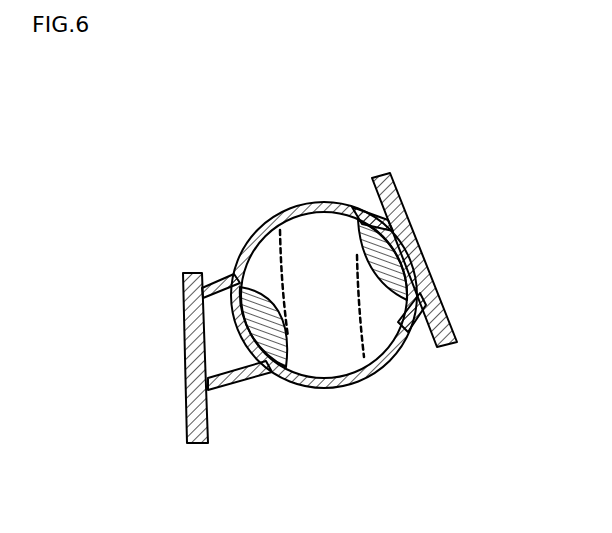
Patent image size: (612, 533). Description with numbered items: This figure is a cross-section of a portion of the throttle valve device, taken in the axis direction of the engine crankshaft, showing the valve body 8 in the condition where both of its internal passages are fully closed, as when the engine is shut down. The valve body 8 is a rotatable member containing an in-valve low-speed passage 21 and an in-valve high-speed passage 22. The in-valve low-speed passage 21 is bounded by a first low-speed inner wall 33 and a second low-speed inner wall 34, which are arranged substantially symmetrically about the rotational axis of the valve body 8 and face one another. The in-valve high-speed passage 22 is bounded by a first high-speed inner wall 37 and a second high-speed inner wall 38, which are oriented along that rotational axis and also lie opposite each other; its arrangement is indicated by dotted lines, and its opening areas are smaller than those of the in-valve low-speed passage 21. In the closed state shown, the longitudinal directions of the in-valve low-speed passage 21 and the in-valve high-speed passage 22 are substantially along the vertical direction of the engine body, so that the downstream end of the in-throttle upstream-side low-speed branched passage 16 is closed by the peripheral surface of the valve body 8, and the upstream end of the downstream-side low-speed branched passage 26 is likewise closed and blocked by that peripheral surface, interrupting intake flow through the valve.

The valve body 8 is at (408, 274).
The in-throttle upstream-side low-speed branched passage 16 is at (418, 258).
The in-valve low-speed passage 21 is at (264, 241).
The in-valve high-speed passage 22 is at (316, 331).
The downstream-side low-speed branched passage 26 is at (193, 353).
The first low-speed inner wall 33 is at (260, 292).
The second low-speed inner wall 34 is at (378, 292).
The first high-speed inner wall 37 is at (280, 262).
The second high-speed inner wall 38 is at (355, 350).